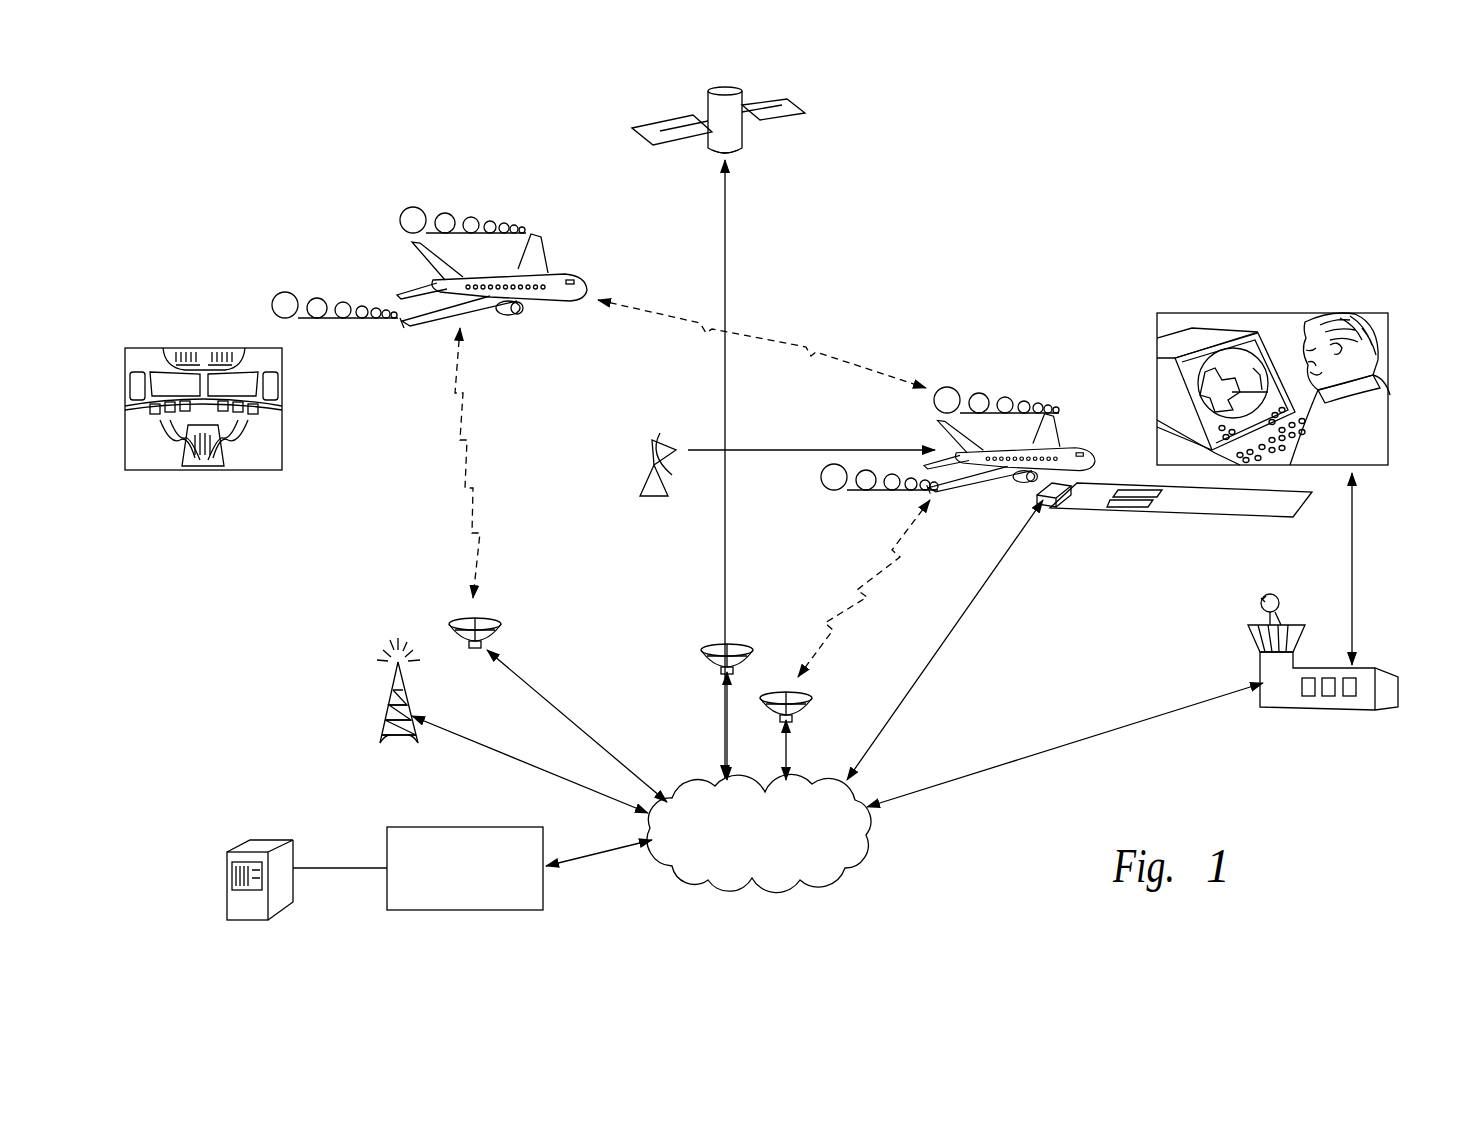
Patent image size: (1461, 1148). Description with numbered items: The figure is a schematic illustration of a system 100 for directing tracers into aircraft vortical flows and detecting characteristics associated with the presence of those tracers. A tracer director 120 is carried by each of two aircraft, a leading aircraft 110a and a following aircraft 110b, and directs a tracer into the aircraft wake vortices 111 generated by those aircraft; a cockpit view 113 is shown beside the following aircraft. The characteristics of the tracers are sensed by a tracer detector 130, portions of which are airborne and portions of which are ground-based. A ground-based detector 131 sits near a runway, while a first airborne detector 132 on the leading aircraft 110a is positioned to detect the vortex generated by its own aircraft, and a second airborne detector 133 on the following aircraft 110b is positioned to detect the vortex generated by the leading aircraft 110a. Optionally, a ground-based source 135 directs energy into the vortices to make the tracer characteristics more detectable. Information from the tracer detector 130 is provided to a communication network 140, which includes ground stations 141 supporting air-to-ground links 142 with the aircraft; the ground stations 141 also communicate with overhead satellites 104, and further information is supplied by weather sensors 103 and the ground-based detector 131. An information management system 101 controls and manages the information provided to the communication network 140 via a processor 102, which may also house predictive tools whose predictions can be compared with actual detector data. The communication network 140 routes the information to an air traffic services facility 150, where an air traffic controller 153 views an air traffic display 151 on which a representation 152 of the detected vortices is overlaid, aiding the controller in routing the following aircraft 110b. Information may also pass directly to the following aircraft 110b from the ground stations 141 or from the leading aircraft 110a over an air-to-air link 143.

The system 100 is at (1052, 188).
The information management system 101 is at (425, 827).
The processor 102 is at (247, 843).
The weather sensors 103 is at (395, 668).
The overhead satellites 104 is at (660, 122).
The leading aircraft 110a is at (1087, 453).
The following aircraft 110b is at (577, 277).
The aircraft wake vortices 111 is at (463, 230).
The cockpit 113 is at (200, 472).
The tracer director 120 is at (535, 225).
The tracer detector 130 is at (1052, 533).
The ground-based detector 131 is at (1062, 498).
The first airborne detector 132 is at (520, 267).
The second airborne detector 133 is at (543, 265).
The ground-based source 135 is at (650, 465).
The communication network 140 is at (815, 882).
The ground stations 141 is at (455, 620).
The air-to-ground links 142 is at (487, 498).
The air-to-air link 143 is at (750, 335).
The air traffic services facility 150 is at (1318, 712).
The air traffic display 151 is at (1248, 340).
The representation of the vortices 152 is at (1257, 390).
The air traffic controller 153 is at (1372, 377).